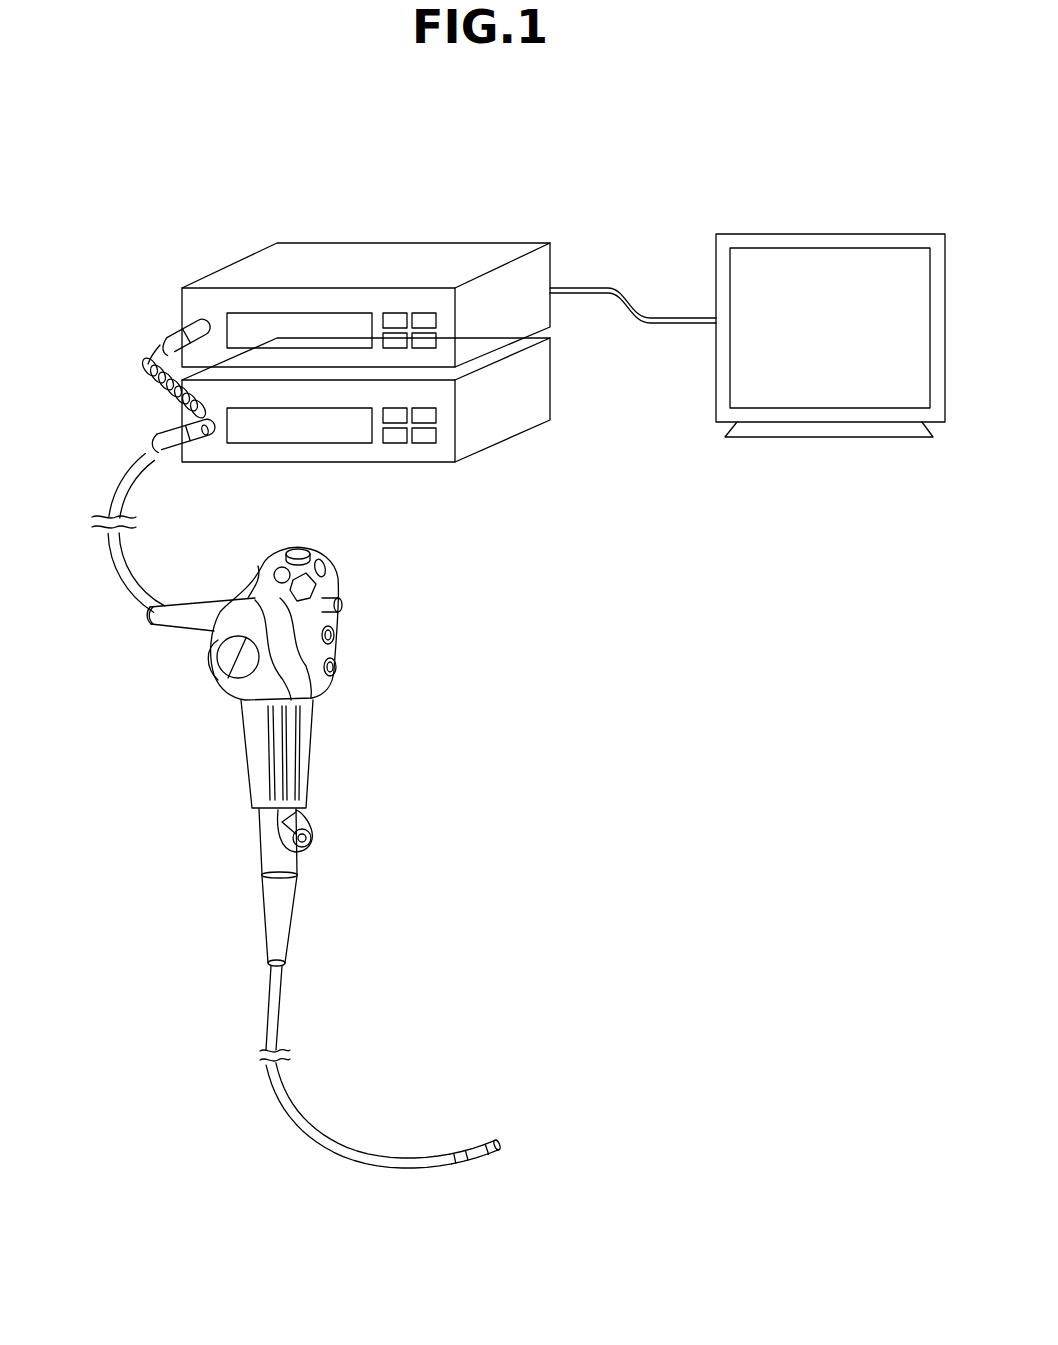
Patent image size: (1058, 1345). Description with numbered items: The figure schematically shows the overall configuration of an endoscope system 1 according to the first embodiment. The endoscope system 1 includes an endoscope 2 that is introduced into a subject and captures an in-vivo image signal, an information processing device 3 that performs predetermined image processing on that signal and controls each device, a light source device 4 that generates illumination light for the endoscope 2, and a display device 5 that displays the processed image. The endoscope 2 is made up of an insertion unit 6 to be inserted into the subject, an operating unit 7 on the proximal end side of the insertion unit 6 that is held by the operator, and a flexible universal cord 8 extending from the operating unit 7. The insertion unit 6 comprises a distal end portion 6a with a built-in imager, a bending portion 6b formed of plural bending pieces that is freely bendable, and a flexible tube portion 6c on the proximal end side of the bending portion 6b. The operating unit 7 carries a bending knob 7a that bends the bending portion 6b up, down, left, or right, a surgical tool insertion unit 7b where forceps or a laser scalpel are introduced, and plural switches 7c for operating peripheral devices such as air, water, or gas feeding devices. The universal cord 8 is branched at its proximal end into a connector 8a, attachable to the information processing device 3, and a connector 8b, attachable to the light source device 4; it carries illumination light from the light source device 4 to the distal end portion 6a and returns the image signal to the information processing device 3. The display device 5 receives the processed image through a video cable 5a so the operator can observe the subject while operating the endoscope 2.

The endoscope system 1 is at (877, 150).
The endoscope 2 is at (436, 698).
The information processing device 3 is at (513, 250).
The light source device 4 is at (537, 382).
The display device 5 is at (832, 240).
The video cable 5a is at (612, 287).
The insertion unit 6 is at (280, 1228).
The distal end portion 6a is at (497, 1150).
The bending portion 6b is at (465, 1155).
The flexible tube portion 6c is at (328, 1133).
The operating unit 7 is at (335, 648).
The bending knob 7a is at (222, 682).
The surgical tool insertion unit 7b is at (312, 832).
The switches 7c is at (300, 545).
The universal cord 8 is at (112, 557).
The connector 8a is at (170, 319).
The connector 8b is at (162, 419).